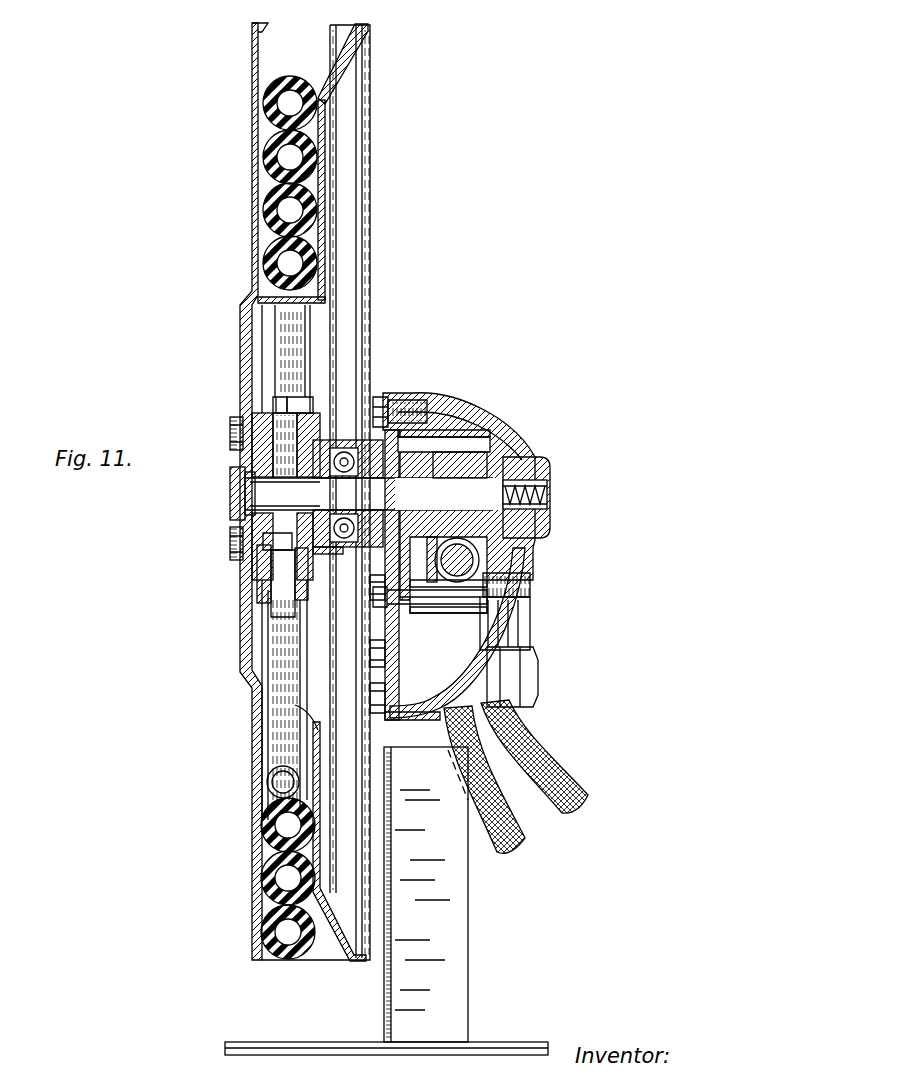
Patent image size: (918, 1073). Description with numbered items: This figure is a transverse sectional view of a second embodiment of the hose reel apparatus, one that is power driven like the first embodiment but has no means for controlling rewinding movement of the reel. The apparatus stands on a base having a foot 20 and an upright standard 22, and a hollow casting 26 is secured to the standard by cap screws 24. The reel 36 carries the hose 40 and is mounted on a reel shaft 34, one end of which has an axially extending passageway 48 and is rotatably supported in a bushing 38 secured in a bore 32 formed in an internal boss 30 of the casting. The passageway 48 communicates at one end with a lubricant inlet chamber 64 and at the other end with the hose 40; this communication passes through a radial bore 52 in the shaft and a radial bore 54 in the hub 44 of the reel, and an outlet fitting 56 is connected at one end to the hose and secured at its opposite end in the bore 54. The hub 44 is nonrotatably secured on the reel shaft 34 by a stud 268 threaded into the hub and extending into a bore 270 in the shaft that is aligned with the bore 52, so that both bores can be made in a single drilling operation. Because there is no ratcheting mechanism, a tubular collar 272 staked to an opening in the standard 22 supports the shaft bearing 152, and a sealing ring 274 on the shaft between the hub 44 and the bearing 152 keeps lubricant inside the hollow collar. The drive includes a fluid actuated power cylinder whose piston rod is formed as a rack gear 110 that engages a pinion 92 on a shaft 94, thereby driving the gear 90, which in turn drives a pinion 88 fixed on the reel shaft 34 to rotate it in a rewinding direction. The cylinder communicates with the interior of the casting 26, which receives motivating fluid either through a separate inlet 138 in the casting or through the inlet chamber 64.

The foot 20 is at (322, 1050).
The upright standard 22 is at (450, 900).
The cap screws 24 is at (372, 703).
The hollow casting 26 is at (435, 395).
The internal boss 30 is at (508, 447).
The bore 32 is at (445, 494).
The reel shaft 34 is at (369, 494).
The reel 36 is at (240, 300).
The bushing 38 is at (467, 456).
The hose 40 is at (290, 78).
The hub 44 is at (290, 407).
The axially extending passageway 48 is at (230, 492).
The radial bore 52 is at (228, 528).
The radial bore 54 is at (238, 570).
The outlet fitting 56 is at (275, 735).
The lubricant inlet chamber 64 is at (553, 487).
The pinion 88 is at (432, 440).
The gear 90 is at (408, 640).
The pinion 92 is at (470, 627).
The shaft 94 is at (478, 597).
The rack gear 110 is at (500, 568).
The separate inlet 138 is at (455, 683).
The shaft bearing 152 is at (345, 438).
The stud 268 is at (273, 405).
The bore 270 is at (228, 462).
The tubular collar 272 is at (330, 438).
The sealing ring 274 is at (230, 506).